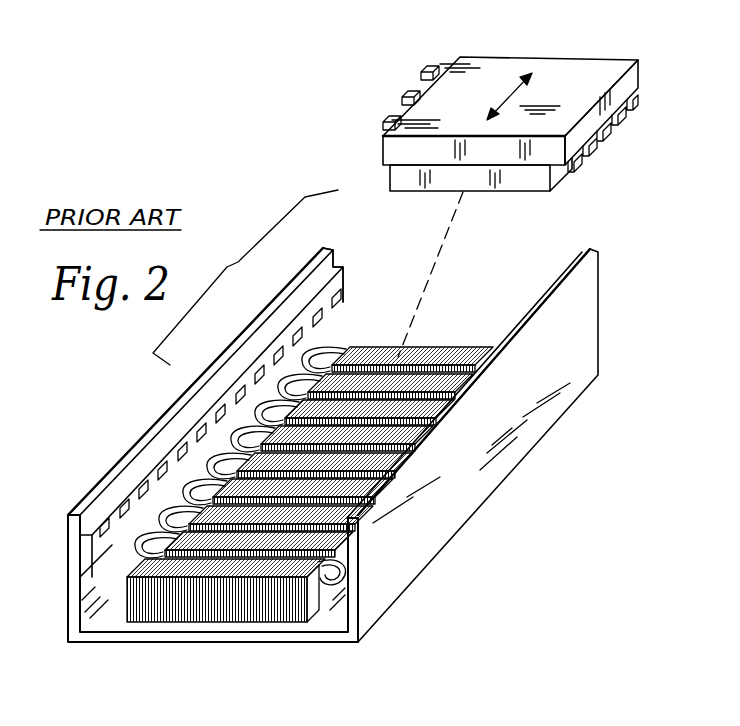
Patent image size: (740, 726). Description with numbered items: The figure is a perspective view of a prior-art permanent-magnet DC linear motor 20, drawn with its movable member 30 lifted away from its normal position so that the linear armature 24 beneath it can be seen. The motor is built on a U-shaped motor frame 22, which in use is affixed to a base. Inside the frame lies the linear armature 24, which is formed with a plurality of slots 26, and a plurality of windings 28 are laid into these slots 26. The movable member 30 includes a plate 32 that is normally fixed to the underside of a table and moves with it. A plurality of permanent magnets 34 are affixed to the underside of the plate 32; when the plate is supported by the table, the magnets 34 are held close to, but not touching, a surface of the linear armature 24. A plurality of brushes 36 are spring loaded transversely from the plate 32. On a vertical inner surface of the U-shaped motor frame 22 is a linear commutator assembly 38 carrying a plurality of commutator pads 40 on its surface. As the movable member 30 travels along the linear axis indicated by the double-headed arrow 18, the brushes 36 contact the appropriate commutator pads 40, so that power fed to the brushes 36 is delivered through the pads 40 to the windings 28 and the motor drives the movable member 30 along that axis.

The double-headed arrow 18 is at (510, 97).
The permanent-magnet DC linear motor 20 is at (167, 387).
The U-shaped motor frame 22 is at (563, 343).
The linear armature 24 is at (270, 610).
The slots 26 is at (430, 393).
The windings 28 is at (167, 510).
The movable member 30 is at (512, 104).
The plate 32 is at (473, 80).
The permanent magnets 34 is at (560, 176).
The brushes 36 is at (388, 116).
The linear commutator assembly 38 is at (347, 292).
The commutator pads 40 is at (102, 552).